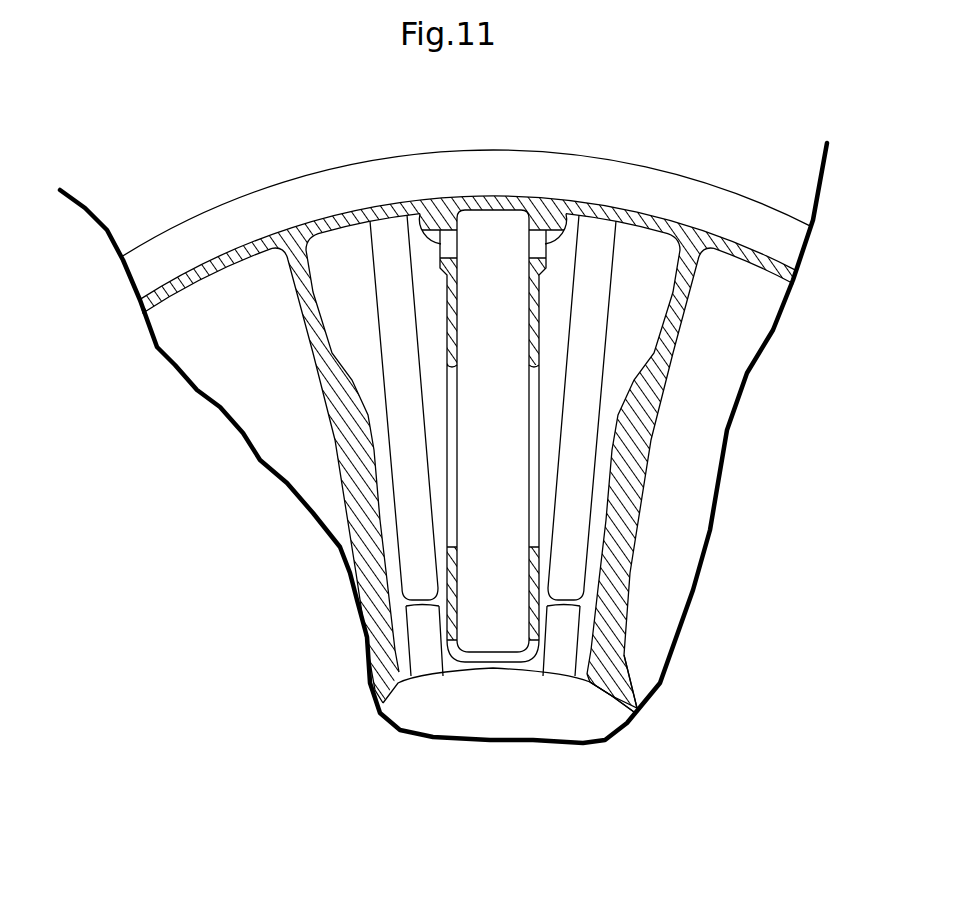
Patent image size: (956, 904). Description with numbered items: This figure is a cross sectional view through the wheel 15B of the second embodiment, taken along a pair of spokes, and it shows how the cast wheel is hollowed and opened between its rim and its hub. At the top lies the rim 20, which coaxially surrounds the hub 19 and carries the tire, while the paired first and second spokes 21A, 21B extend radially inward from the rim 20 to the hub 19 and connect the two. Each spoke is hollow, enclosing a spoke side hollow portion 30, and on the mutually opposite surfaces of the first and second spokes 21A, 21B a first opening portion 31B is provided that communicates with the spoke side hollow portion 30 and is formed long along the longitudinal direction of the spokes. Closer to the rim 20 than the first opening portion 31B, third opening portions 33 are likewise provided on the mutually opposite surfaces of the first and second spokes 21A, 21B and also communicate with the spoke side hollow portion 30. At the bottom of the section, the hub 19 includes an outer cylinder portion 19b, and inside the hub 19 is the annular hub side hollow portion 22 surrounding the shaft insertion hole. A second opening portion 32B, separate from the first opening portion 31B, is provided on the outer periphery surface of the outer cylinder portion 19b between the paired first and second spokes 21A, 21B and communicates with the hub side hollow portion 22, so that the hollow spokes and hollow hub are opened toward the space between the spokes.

The wheel 15B is at (228, 192).
The rim 20 is at (700, 190).
The spoke side hollow portion 30 is at (337, 243).
The first spoke 21A is at (318, 356).
The second spoke 21B is at (648, 415).
The third opening portion 33 is at (422, 202).
The second opening portion 32B is at (503, 676).
The first opening portion 31B is at (458, 466).
The hub side hollow portion 22 is at (427, 713).
The hub 19 is at (620, 678).
The outer cylinder portion 19b is at (623, 697).